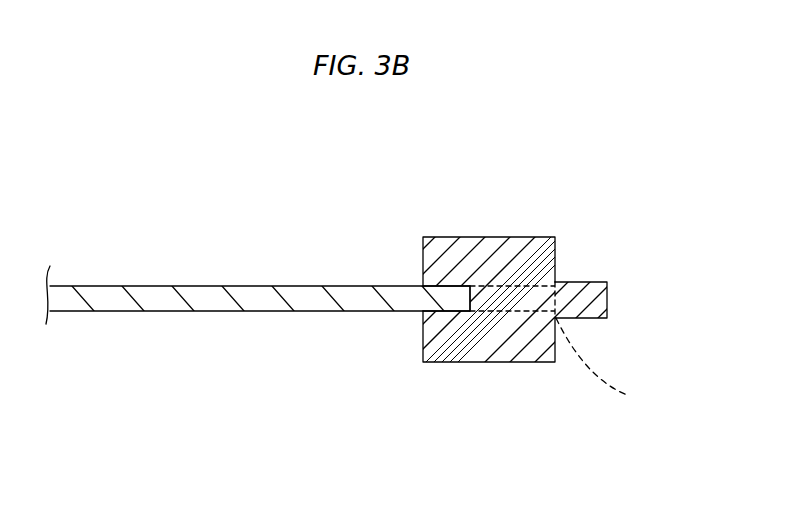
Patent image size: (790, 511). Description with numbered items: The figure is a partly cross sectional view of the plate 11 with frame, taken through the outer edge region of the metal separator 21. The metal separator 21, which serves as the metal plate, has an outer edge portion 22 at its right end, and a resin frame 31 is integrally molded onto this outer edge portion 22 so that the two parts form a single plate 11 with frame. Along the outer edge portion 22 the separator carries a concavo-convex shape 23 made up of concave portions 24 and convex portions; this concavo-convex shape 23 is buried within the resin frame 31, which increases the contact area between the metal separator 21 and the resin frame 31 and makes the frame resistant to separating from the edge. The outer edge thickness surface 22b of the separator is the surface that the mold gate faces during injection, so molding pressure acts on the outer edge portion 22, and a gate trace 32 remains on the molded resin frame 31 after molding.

The plate with frame 11 is at (230, 228).
The metal separator 21 is at (105, 298).
The outer edge portion 22 is at (455, 300).
The outer edge thickness surface 22b is at (618, 364).
The concavo-convex shape 23 is at (486, 286).
The concave portion 24 is at (548, 264).
The resin frame 31 is at (469, 250).
The gate trace 32 is at (607, 298).